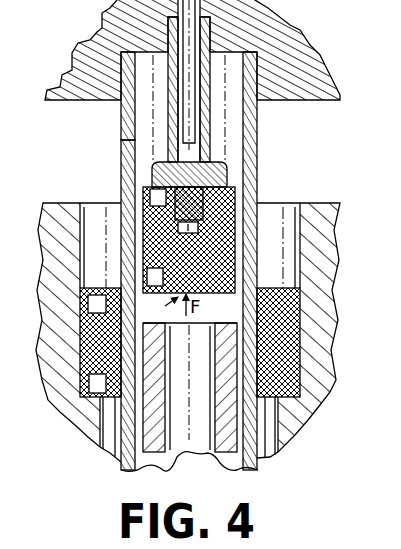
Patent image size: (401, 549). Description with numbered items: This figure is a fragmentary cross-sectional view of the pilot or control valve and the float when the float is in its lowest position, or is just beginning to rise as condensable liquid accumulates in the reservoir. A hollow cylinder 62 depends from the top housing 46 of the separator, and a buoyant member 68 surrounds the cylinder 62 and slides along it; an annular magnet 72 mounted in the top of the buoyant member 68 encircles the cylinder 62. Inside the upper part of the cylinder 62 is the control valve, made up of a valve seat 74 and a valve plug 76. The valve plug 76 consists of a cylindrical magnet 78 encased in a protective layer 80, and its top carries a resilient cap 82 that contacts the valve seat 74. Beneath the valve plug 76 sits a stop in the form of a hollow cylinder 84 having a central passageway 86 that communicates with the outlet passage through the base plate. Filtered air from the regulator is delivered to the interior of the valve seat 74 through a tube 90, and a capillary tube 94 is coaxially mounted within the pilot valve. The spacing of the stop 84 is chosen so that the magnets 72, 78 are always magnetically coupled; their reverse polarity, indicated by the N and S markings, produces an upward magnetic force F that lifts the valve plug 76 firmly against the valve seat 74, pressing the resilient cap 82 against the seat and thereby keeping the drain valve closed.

The top housing 46 is at (290, 100).
The tube 90 is at (212, 6).
The capillary tube 94 is at (183, 123).
The resilient cap 82 is at (128, 130).
The protective layer 80 is at (130, 149).
The hollow cylinder 62 is at (119, 183).
The buoyant member 68 is at (316, 203).
The annular magnet 72 is at (280, 289).
The valve seat 74 is at (212, 157).
The cylindrical magnet 78 is at (236, 194).
The valve plug 76 is at (189, 308).
The hollow cylinder stop 84 is at (228, 455).
The central passageway 86 is at (182, 438).